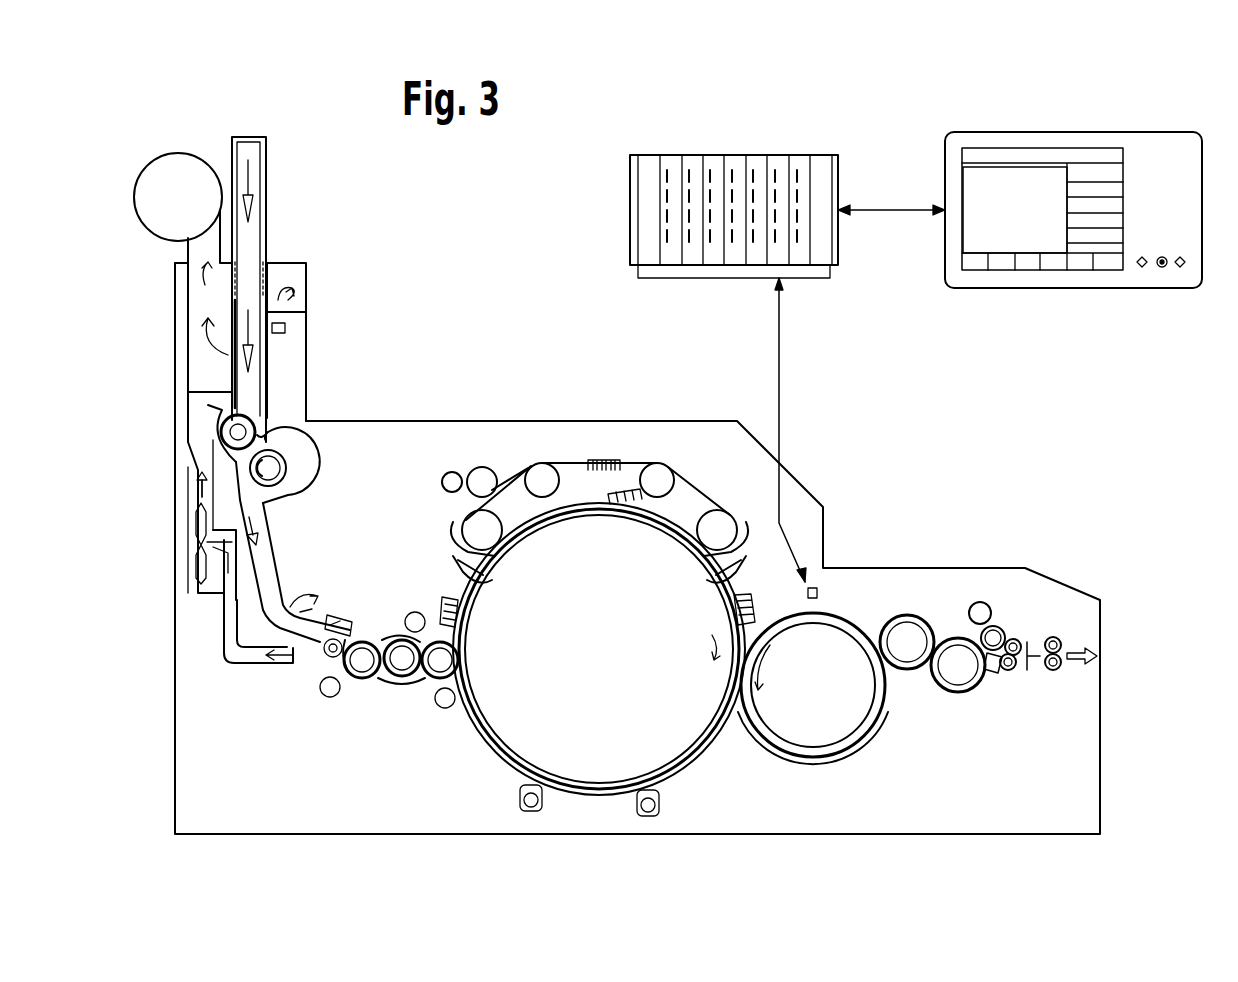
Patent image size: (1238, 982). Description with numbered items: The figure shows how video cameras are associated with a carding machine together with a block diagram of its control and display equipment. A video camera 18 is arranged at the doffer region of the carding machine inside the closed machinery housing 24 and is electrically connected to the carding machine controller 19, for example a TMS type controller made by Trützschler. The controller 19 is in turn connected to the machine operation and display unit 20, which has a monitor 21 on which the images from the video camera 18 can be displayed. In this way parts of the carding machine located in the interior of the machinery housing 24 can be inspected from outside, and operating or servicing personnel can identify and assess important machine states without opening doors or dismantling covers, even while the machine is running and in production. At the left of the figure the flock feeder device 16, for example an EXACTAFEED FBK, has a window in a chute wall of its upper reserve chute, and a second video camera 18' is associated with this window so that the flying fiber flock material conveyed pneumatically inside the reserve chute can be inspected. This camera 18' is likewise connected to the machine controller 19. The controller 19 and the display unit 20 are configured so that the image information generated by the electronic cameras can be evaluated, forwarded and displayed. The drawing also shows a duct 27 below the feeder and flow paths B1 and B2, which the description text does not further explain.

The flock feeder device 16 is at (150, 356).
The video camera 18 is at (839, 438).
The video camera 18' is at (314, 329).
The carding machine controller 19 is at (648, 193).
The machine operation and display unit 20 is at (1080, 132).
The monitor 21 is at (1007, 238).
The machinery housing 24 is at (478, 418).
The feed duct 27 is at (262, 572).
The flow path B1 is at (196, 478).
The flow path B2 is at (262, 523).